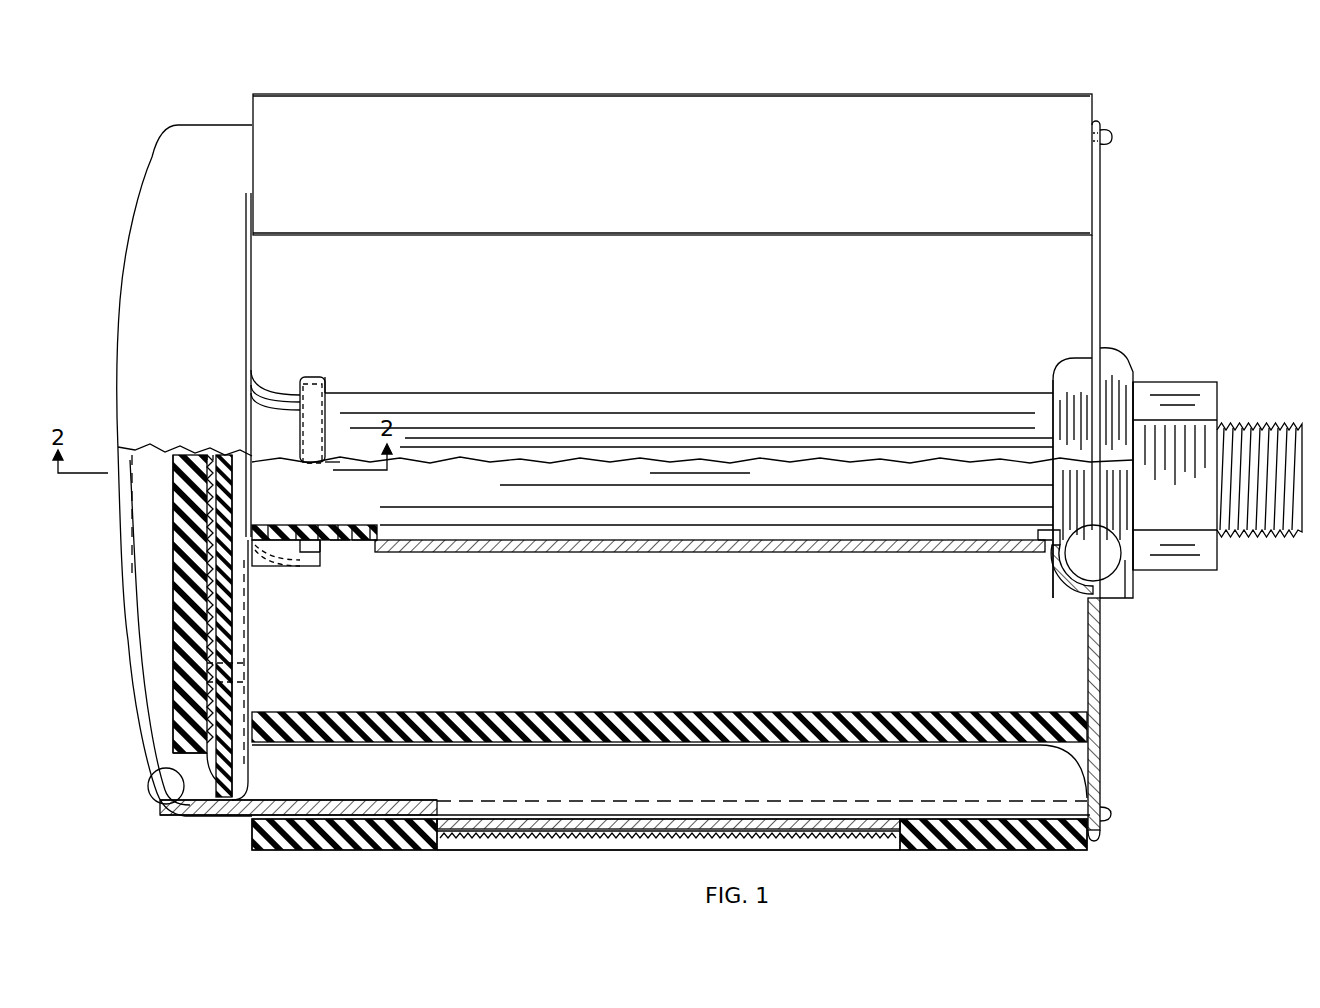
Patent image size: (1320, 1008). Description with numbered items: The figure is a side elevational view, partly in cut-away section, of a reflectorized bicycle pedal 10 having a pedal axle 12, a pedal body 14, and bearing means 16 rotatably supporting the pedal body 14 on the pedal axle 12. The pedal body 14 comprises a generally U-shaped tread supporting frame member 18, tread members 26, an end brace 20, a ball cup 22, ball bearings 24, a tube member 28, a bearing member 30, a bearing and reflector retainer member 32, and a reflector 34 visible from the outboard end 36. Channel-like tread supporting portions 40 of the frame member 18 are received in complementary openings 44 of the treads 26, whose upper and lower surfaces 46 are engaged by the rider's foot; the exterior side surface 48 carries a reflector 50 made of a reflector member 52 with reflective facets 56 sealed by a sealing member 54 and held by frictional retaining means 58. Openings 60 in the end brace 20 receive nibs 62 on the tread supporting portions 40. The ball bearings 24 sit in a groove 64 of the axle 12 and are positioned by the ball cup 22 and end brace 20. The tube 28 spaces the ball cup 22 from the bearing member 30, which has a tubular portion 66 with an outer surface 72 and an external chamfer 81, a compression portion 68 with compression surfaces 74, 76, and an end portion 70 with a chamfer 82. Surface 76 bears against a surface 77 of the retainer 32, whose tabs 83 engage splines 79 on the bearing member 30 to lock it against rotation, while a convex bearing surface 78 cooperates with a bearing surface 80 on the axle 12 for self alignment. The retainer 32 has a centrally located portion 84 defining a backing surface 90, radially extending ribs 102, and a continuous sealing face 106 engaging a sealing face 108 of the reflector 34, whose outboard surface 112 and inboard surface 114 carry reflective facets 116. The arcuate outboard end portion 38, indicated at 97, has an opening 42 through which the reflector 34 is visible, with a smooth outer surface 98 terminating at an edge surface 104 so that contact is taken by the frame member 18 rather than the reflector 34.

The bicycle pedal 10 is at (1214, 232).
The pedal axle 12 is at (853, 495).
The pedal body 14 is at (1050, 96).
The bearing means 16 is at (312, 525).
The tread supporting frame member 18 is at (189, 170).
The end brace 20 is at (1102, 272).
The ball cup 22 is at (1075, 590).
The ball bearings 24 is at (1070, 557).
The tread members 26 is at (360, 848).
The tube member 28 is at (585, 553).
The bearing member 30 is at (325, 545).
The bearing and reflector retainer member 32 is at (235, 662).
The reflector 34 is at (190, 620).
The outboard end 36 is at (128, 198).
The outboard end portion 38 is at (150, 152).
The tread supporting portions 40 is at (250, 133).
The opening 42 is at (200, 790).
The openings 44 is at (1065, 762).
The upper and lower surfaces 46 is at (483, 140).
The exterior side surface 48 is at (823, 93).
The reflectors 50 is at (482, 842).
The reflector member 52 is at (535, 840).
The sealing member 54 is at (590, 840).
The reflective facets 56 is at (650, 840).
The frictional retaining means 58 is at (440, 842).
The openings 60 is at (1098, 800).
The nibs 62 is at (1112, 813).
The groove 64 is at (1105, 488).
The tubular portion 66 is at (368, 548).
The compression portion 68 is at (305, 560).
The end portion 70 is at (288, 535).
The outer surface 72 is at (340, 545).
The compression surface 74 is at (345, 535).
The compression surface 76 is at (318, 535).
The surface 77 is at (298, 522).
The bearing surface 78 is at (352, 522).
The splines 79 is at (323, 465).
The bearing surface 80 is at (345, 470).
The external chamfer 81 is at (372, 538).
The chamfer 82 is at (238, 545).
The tabs 83 is at (318, 560).
The centrally located portion 84 is at (282, 565).
The backing surface 90 is at (200, 590).
The arcuate shape 97 is at (130, 492).
The outer surface 98 is at (165, 806).
The radially extending ribs 102 is at (272, 395).
The edge surface 104 is at (160, 820).
The sealing face 106 is at (180, 762).
The sealing face 108 is at (190, 727).
The outboard surface 112 is at (200, 568).
The inboard surface 114 is at (195, 508).
The reflective facets 116 is at (220, 645).